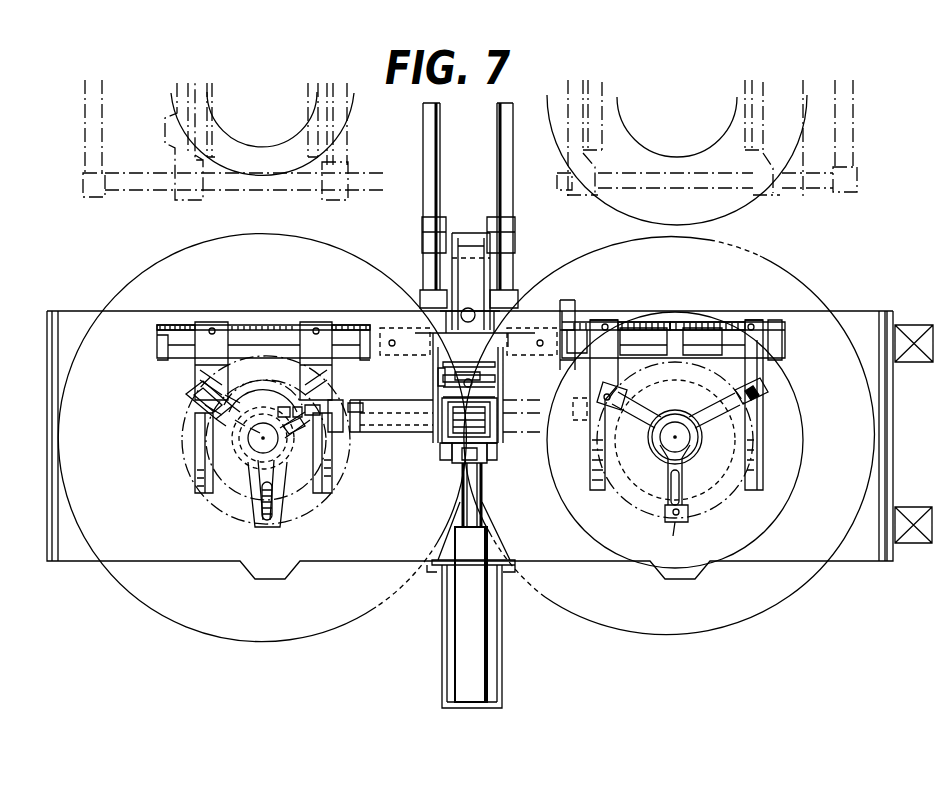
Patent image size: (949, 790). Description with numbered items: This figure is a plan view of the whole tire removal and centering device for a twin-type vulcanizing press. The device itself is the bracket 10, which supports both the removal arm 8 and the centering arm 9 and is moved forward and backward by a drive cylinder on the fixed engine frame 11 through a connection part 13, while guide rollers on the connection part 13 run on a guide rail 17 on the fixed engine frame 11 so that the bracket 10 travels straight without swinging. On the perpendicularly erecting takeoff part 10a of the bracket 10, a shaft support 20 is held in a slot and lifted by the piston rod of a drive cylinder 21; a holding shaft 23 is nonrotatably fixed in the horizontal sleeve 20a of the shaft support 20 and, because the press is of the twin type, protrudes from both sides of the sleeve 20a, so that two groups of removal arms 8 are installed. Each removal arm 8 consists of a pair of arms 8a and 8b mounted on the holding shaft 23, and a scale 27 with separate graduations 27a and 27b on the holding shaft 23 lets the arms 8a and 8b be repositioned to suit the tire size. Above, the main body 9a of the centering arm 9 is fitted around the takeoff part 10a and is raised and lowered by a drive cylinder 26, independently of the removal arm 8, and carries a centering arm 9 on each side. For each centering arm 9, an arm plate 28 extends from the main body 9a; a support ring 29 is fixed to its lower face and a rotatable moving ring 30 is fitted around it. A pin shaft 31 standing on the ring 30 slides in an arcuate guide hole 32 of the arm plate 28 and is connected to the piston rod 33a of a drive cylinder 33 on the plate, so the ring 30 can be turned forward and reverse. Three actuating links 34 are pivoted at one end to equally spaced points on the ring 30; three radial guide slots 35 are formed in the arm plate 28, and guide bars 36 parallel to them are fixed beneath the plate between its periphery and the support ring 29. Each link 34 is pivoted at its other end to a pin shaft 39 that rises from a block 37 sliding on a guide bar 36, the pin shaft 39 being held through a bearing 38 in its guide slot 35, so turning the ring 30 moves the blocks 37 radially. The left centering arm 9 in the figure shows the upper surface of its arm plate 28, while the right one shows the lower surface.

The removal arm 8 is at (301, 310).
The arm 8a is at (598, 488).
The arm 8b is at (203, 481).
The centering arm 9 is at (404, 450).
The main body 9a is at (495, 445).
The bracket 10 is at (440, 373).
The takeoff part 10a is at (445, 443).
The fixed engine frame 11 is at (497, 627).
The connection part 13 is at (472, 253).
The guide rail 17 is at (500, 180).
The shaft support 20 is at (514, 393).
The horizontal sleeve 20a is at (465, 343).
The drive cylinder 21 is at (493, 372).
The holding shaft 23 is at (567, 312).
The drive cylinder 26 is at (481, 480).
The scale 27 is at (285, 322).
The graduations 27a is at (334, 322).
The graduations 27b is at (176, 323).
The arm plate 28 is at (278, 468).
The support ring 29 is at (667, 447).
The rotatable moving ring 30 is at (700, 452).
The pin shaft 31 is at (510, 361).
The arcuate guide hole 32 is at (262, 402).
The drive cylinder 33 is at (358, 406).
The piston rod 33a is at (300, 428).
The actuating links 34 is at (770, 450).
The guide slots 35 is at (192, 410).
The guide bars 36 is at (758, 404).
The block 37 is at (740, 402).
The bearings 38 is at (225, 425).
The pin shafts 39 is at (757, 396).